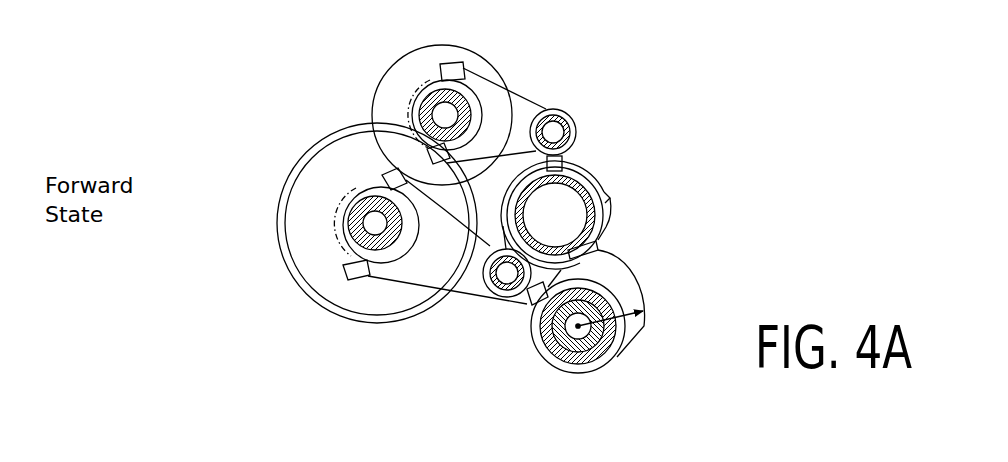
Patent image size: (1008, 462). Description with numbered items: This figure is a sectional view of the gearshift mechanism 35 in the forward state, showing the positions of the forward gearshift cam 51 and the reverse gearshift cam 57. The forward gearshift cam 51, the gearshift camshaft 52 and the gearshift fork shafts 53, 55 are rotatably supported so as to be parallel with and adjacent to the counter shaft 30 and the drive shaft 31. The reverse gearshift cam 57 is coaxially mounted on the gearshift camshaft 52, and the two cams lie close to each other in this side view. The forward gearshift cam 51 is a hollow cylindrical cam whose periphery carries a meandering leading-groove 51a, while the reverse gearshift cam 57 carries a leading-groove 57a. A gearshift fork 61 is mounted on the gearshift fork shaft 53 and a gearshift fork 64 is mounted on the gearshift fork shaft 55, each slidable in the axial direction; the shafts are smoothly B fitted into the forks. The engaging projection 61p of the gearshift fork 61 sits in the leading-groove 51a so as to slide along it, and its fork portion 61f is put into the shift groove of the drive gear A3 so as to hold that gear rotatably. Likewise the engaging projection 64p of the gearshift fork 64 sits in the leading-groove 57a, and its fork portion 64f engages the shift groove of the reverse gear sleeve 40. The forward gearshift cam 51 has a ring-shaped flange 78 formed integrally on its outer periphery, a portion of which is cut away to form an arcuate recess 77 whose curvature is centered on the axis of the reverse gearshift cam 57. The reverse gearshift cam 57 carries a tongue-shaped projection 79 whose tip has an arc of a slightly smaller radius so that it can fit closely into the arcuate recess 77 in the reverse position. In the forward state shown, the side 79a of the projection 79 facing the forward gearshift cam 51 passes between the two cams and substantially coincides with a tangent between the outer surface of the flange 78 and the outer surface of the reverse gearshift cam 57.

The transmission mechanism 35 is at (333, 54).
The counter shaft 30 is at (423, 92).
The drive shaft 31 is at (357, 185).
The reverse gear sleeve 40 is at (298, 163).
The drive gear A3 is at (393, 62).
The brake B is at (295, 289).
The gearshift fork 61 is at (538, 105).
The fork portion 61f is at (456, 63).
The engaging projection 61p is at (562, 166).
The gearshift fork shaft 53 is at (566, 111).
The forward gearshift cam 51 is at (606, 172).
The leading-groove 51a is at (607, 198).
The arcuate recess 77 is at (609, 224).
The flange 78 is at (500, 223).
The tongue-shaped projection 79 is at (633, 280).
The side of projection 79a is at (598, 249).
The gearshift fork shaft 55 is at (483, 276).
The gearshift fork 64 is at (401, 290).
The fork portion 64f is at (350, 281).
The engaging projection 64p is at (531, 307).
The reverse gearshift cam 57 is at (620, 360).
The leading-groove 57a is at (590, 373).
The gearshift camshaft 52 is at (566, 356).